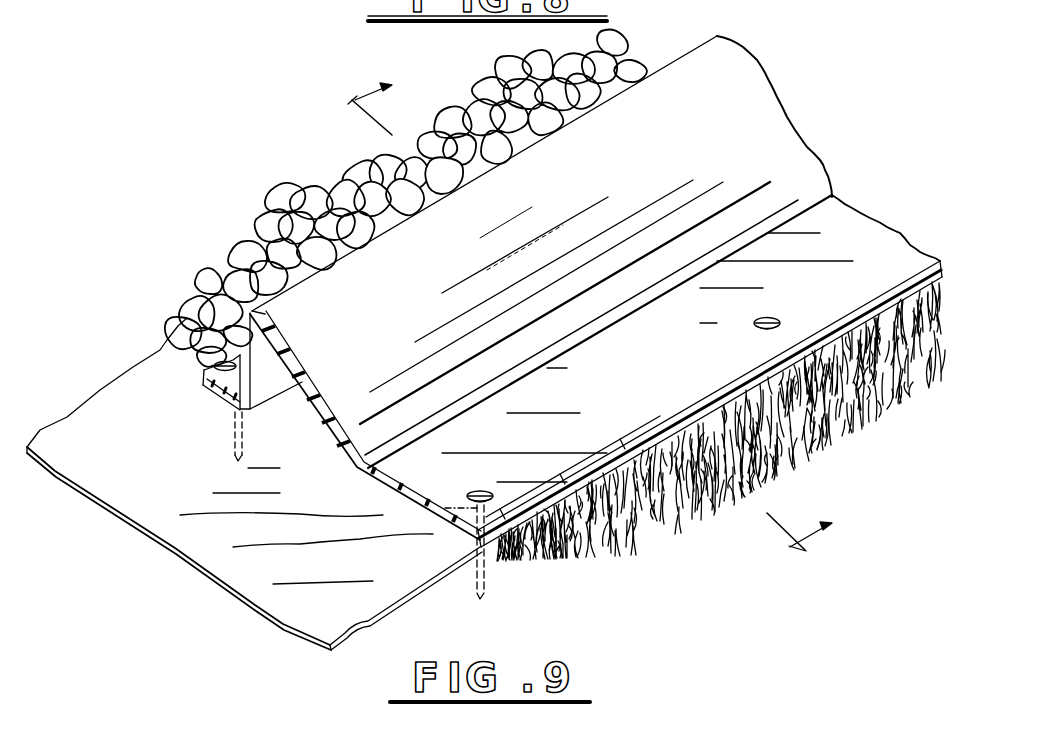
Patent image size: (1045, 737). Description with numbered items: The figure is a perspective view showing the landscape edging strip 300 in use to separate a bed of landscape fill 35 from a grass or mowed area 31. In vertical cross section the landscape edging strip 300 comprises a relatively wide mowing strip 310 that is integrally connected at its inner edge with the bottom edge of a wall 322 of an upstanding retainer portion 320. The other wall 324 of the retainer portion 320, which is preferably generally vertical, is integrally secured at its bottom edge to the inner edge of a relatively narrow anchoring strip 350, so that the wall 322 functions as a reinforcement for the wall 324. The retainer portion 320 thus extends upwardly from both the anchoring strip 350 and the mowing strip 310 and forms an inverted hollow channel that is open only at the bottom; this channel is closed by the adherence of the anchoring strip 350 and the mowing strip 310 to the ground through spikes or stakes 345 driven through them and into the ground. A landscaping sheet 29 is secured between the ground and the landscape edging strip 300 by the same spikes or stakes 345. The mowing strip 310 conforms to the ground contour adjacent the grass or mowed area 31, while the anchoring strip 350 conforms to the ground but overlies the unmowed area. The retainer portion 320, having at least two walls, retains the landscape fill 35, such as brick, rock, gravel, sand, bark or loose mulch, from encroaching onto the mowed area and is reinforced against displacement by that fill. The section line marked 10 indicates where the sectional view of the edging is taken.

The landscape edging strip 300 is at (543, 299).
The upstanding retainer portion 320 is at (620, 172).
The wall 322 is at (327, 402).
The wall 324 is at (252, 345).
The spikes or stakes 345 is at (214, 366).
The anchoring strip 350 is at (221, 397).
The mowing strip 310 is at (857, 289).
The landscape fill 35 is at (310, 175).
The landscaping sheet 29 is at (197, 544).
The grass or mowed area 31 is at (600, 550).
The section line 10 is at (600, 306).